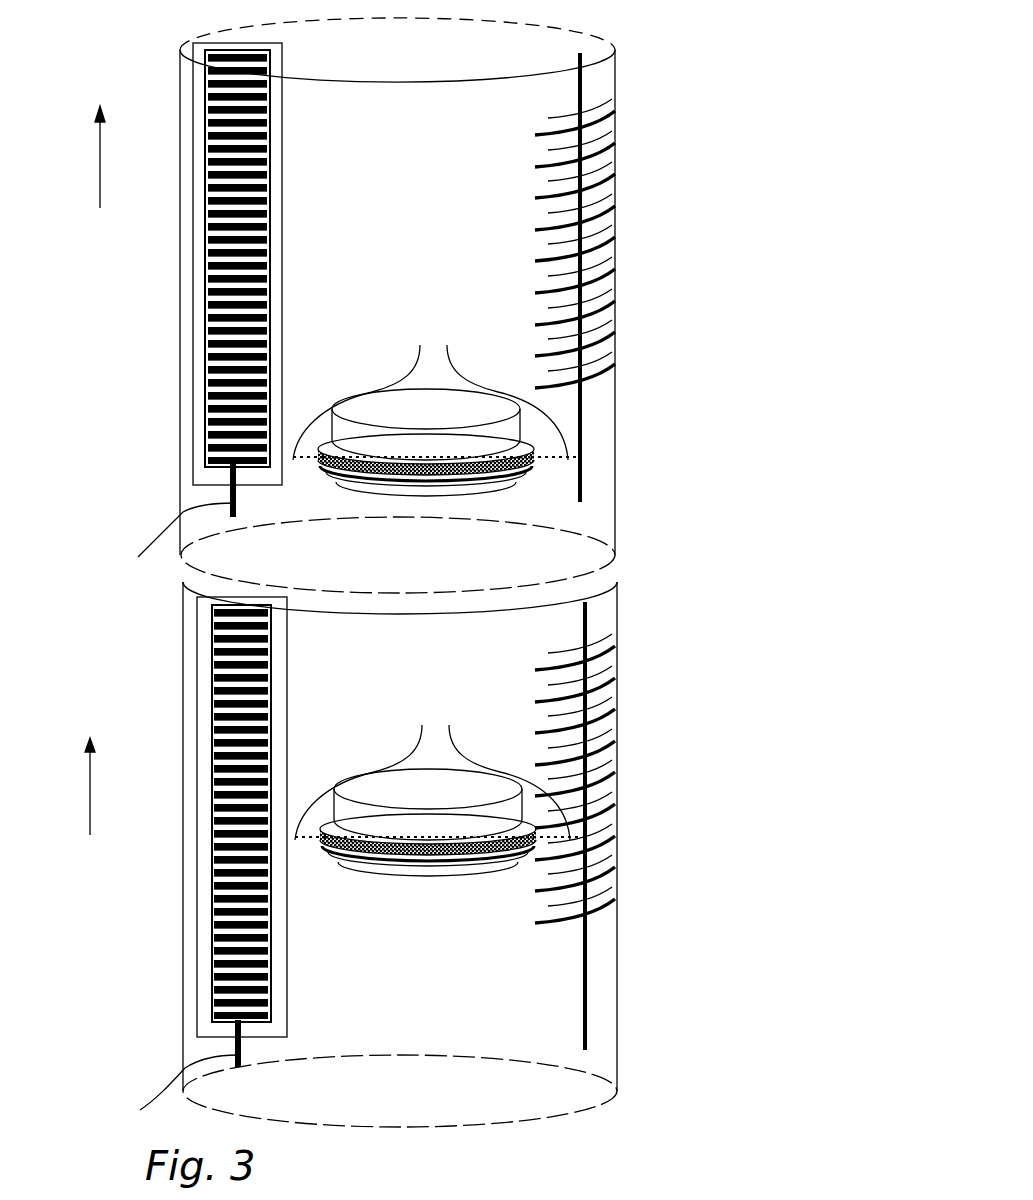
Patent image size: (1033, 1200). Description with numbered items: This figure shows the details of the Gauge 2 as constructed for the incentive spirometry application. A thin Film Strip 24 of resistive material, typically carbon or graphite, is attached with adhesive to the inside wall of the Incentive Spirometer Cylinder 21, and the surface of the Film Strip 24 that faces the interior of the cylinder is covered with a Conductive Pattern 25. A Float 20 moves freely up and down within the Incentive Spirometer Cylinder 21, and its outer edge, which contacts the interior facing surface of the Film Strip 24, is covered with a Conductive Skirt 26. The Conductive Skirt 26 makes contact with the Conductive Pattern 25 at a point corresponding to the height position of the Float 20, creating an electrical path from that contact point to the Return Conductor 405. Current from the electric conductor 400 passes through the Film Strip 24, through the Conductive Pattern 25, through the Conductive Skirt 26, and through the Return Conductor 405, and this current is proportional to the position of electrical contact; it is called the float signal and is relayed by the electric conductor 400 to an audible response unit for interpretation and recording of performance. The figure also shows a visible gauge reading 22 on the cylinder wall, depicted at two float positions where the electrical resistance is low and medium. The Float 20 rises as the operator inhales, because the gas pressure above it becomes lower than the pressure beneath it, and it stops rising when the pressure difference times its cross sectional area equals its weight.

The gauge 2 is at (467, 596).
The float 20 is at (486, 425).
The incentive spirometer cylinder 21 is at (183, 980).
The visible gauge reading 22 is at (840, 669).
The film strip 24 is at (275, 168).
The conductive pattern 25 is at (212, 703).
The conductive skirt 26 is at (455, 478).
The electric conductor 400 is at (164, 795).
The return conductor 405 is at (583, 402).